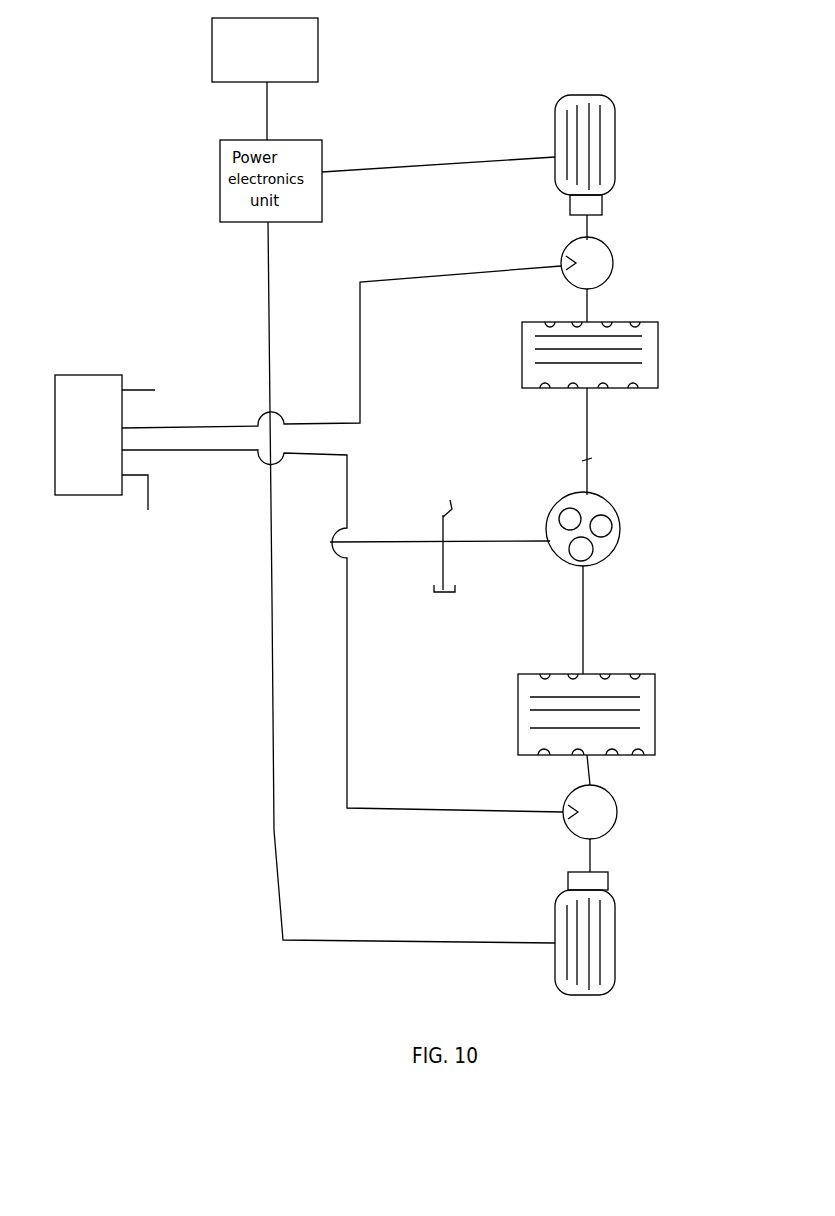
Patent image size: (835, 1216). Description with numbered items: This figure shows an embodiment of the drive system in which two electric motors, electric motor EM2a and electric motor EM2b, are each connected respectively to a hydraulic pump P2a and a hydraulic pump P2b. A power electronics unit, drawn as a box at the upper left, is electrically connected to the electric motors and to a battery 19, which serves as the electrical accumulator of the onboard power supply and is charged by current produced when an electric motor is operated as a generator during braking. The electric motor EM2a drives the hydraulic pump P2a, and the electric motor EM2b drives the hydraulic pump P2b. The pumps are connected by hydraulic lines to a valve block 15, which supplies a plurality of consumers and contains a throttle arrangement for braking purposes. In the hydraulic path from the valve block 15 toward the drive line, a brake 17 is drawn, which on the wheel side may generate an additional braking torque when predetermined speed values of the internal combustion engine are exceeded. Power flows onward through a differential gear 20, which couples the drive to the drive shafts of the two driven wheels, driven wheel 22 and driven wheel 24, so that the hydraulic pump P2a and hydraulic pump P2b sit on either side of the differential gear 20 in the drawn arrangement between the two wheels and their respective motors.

The battery 19 is at (316, 48).
The valve block 15 is at (100, 444).
The brake 17 is at (467, 540).
The differential gear 20 is at (610, 503).
The driven wheel 22 is at (658, 358).
The driven wheel 24 is at (655, 718).
The electric motor EM2a is at (615, 152).
The hydraulic pump P2a is at (612, 254).
The hydraulic pump P2b is at (618, 812).
The electric motor EM2b is at (615, 925).